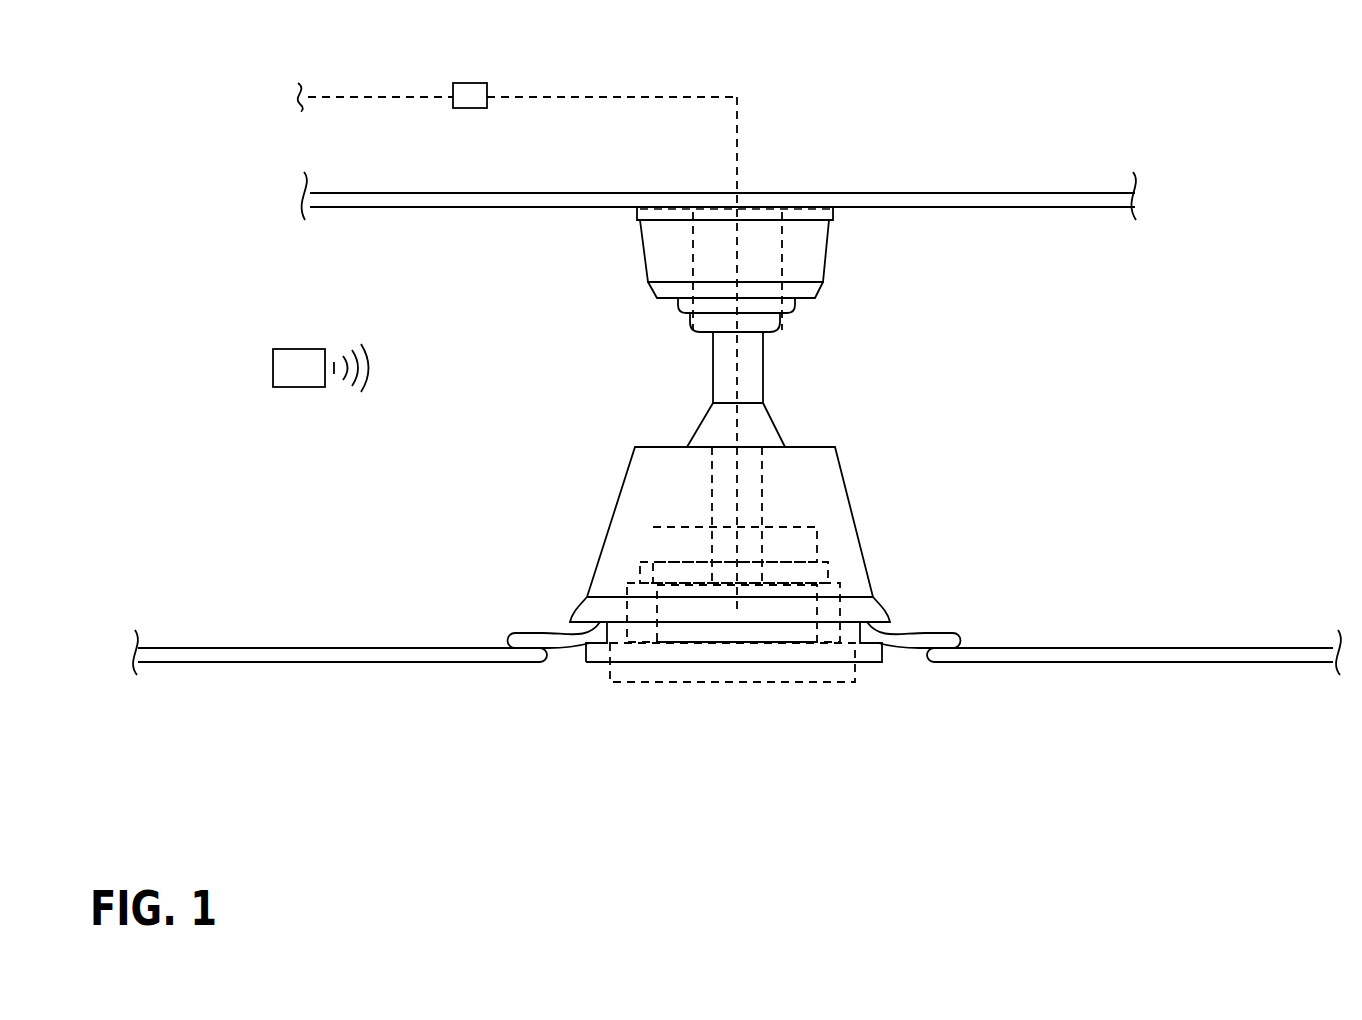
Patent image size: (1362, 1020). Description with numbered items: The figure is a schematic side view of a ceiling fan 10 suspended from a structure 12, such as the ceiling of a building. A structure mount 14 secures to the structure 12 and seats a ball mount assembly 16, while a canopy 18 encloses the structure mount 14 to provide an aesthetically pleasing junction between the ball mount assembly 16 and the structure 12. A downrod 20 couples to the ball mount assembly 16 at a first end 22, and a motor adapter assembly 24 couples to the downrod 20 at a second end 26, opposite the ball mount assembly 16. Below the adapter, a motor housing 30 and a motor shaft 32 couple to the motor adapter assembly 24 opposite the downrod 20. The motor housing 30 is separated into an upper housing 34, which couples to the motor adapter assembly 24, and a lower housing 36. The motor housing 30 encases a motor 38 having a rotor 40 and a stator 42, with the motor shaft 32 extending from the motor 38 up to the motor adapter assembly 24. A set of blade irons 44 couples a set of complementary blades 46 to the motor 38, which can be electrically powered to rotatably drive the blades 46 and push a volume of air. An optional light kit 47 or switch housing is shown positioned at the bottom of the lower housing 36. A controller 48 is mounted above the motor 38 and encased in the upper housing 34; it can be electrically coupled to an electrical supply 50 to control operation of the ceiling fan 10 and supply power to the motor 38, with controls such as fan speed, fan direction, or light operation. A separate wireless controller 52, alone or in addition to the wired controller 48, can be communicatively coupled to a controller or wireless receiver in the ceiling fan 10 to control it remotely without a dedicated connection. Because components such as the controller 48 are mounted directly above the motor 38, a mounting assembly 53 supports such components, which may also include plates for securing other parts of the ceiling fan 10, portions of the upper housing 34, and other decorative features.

The ceiling fan 10 is at (812, 49).
The structure 12 is at (995, 192).
The structure mount 14 is at (692, 228).
The ball mount assembly 16 is at (680, 332).
The canopy 18 is at (823, 262).
The downrod 20 is at (763, 348).
The first end 22 is at (732, 334).
The motor adapter assembly 24 is at (790, 424).
The second end 26 is at (730, 402).
The motor housing 30 is at (890, 570).
The motor shaft 32 is at (712, 490).
The upper housing 34 is at (857, 527).
The lower housing 36 is at (873, 662).
The motor 38 is at (612, 654).
The rotor 40 is at (627, 590).
The stator 42 is at (722, 628).
The blade irons 44 is at (932, 642).
The blades 46 is at (1157, 655).
The light kit 47 is at (835, 682).
The controller 48 is at (798, 527).
The electrical supply 50 is at (469, 83).
The wireless controller 52 is at (300, 348).
The mounting assembly 53 is at (640, 583).